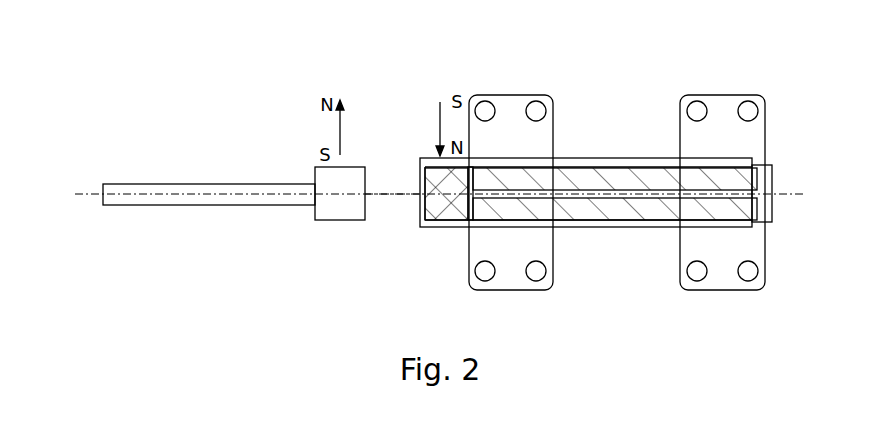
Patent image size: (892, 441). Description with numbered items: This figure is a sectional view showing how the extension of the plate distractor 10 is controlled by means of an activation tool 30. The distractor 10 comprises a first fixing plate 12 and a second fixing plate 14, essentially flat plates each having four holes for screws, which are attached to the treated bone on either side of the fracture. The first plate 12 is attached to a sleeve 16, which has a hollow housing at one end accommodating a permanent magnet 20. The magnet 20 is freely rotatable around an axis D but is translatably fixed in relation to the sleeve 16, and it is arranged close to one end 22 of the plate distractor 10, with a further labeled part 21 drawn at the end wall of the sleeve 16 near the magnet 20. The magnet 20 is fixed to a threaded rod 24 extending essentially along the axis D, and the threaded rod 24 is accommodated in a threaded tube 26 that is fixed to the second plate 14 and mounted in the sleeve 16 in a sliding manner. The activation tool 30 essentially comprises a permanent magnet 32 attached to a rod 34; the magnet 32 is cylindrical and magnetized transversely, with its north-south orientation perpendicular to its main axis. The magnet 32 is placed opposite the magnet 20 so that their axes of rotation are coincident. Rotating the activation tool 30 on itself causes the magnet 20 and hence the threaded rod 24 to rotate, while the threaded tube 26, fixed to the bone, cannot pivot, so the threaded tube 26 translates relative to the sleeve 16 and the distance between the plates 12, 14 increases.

The plate distractor 10 is at (650, 86).
The first fixing plate 12 is at (511, 106).
The second fixing plate 14 is at (722, 106).
The sleeve 16 is at (606, 226).
The permanent magnet 20 is at (437, 221).
The end wall 21 is at (415, 210).
The end of the plate distractor 22 is at (409, 164).
The threaded rod 24 is at (578, 188).
The threaded tube 26 is at (662, 221).
The activation tool 30 is at (266, 88).
The permanent magnet 32 is at (340, 211).
The rod 34 is at (210, 183).
The axis D is at (393, 198).